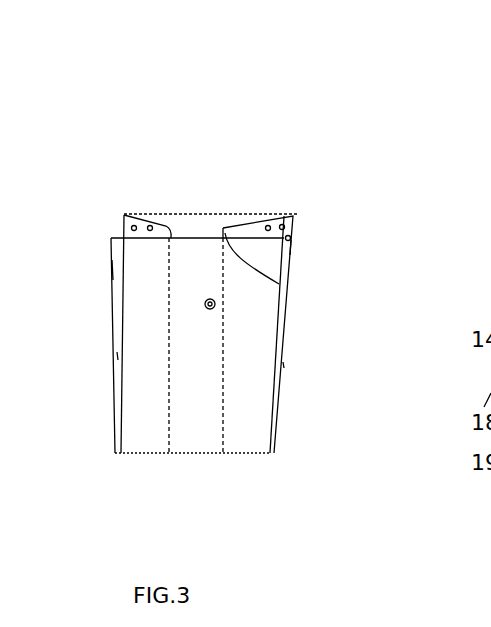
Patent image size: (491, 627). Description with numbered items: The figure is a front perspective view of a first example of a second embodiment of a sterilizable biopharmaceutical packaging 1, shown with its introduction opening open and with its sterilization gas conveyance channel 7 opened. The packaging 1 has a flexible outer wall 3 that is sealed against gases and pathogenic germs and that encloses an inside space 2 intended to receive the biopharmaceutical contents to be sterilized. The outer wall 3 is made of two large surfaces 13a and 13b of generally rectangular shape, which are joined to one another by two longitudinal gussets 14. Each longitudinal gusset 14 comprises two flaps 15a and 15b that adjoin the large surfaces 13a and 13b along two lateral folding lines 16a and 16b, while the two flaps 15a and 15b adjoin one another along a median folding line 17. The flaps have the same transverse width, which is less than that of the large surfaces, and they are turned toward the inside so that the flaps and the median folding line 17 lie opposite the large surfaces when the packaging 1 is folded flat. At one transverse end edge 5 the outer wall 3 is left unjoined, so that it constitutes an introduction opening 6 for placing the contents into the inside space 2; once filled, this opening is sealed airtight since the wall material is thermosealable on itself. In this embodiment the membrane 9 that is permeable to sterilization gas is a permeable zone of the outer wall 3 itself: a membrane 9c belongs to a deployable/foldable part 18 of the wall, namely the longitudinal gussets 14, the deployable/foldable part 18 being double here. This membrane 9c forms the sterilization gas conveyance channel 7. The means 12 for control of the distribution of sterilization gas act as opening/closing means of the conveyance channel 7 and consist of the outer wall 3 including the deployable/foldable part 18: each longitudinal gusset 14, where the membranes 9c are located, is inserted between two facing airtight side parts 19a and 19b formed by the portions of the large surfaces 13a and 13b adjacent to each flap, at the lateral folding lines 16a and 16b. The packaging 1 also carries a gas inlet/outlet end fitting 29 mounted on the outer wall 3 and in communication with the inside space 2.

The sterilizable biopharmaceutical packaging 1 is at (172, 188).
The inside space 2 is at (192, 214).
The flexible outer wall 3 is at (140, 310).
The transverse end edge 5 is at (129, 191).
The introduction opening 6 is at (167, 216).
The sterilization gas conveyance channel 7 is at (298, 244).
The membrane permeable to sterilization gas 9 is at (331, 275).
The membrane permeable to sterilization gas 9c is at (285, 215).
The means for control of the distribution of sterilization gas 12 is at (107, 223).
The large surface 13a is at (142, 420).
The large surface 13b is at (213, 215).
The longitudinal gusset 14 is at (118, 268).
The flap 15a is at (296, 215).
The flap 15b is at (279, 283).
The lateral folding line 16a is at (278, 312).
The lateral folding line 16b is at (297, 229).
The median folding line 17 is at (223, 267).
The deployable/foldable part 18 is at (120, 355).
The side part 19a is at (263, 372).
The side part 19b is at (267, 213).
The gas inlet/outlet end fitting 29 is at (209, 311).